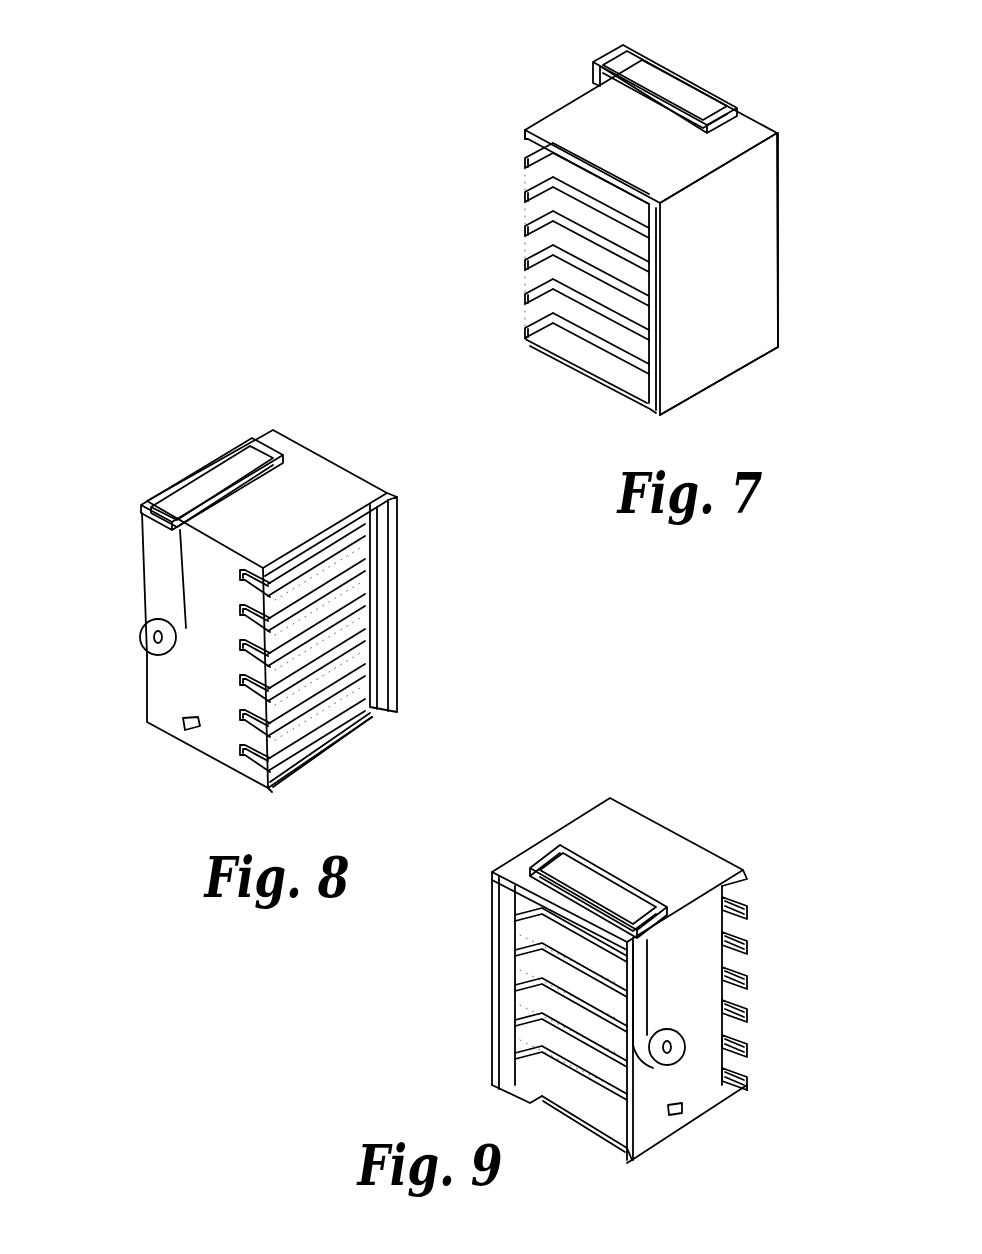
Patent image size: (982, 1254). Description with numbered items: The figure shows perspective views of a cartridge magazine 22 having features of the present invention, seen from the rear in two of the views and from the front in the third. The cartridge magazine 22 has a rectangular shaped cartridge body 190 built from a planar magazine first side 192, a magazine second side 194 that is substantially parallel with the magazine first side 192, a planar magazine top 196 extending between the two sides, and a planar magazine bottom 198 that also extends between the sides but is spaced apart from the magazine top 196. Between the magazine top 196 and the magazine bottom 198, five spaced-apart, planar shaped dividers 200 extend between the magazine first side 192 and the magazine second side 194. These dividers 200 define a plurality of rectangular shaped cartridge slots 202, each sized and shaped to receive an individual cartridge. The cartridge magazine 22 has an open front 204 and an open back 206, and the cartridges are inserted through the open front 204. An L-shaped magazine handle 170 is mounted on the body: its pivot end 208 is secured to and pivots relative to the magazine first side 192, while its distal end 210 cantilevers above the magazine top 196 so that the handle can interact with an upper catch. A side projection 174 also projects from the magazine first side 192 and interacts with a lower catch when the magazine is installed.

In FIG. 7, the cartridge magazine 22 is at (649, 221).
In FIG. 8, the cartridge magazine 22 is at (288, 583).
In FIG. 9, the cartridge magazine 22 is at (629, 970).
In FIG. 7, the magazine handle 170 is at (692, 68).
In FIG. 8, the magazine handle 170 is at (215, 506).
In FIG. 9, the magazine handle 170 is at (550, 938).
In FIG. 8, the side projection 174 is at (184, 731).
In FIG. 9, the side projection 174 is at (682, 1113).
In FIG. 7, the cartridge body 190 is at (789, 213).
In FIG. 8, the cartridge body 190 is at (303, 462).
In FIG. 9, the cartridge body 190 is at (593, 826).
In FIG. 7, the magazine first side 192 is at (548, 108).
In FIG. 8, the magazine first side 192 is at (185, 690).
In FIG. 9, the magazine first side 192 is at (700, 977).
In FIG. 7, the magazine second side 194 is at (759, 347).
In FIG. 8, the magazine second side 194 is at (370, 482).
In FIG. 9, the magazine second side 194 is at (557, 835).
In FIG. 7, the magazine top 196 is at (590, 112).
In FIG. 8, the magazine top 196 is at (320, 507).
In FIG. 9, the magazine top 196 is at (645, 835).
In FIG. 7, the magazine bottom 198 is at (697, 395).
In FIG. 8, the magazine bottom 198 is at (307, 760).
In FIG. 9, the magazine bottom 198 is at (597, 1130).
In FIG. 7, the dividers 200 is at (570, 188).
In FIG. 8, the dividers 200 is at (327, 672).
In FIG. 9, the dividers 200 is at (563, 1047).
In FIG. 7, the cartridge slots 202 is at (540, 262).
In FIG. 8, the cartridge slots 202 is at (352, 595).
In FIG. 9, the cartridge slots 202 is at (545, 998).
In FIG. 9, the open front 204 is at (550, 1120).
In FIG. 7, the open back 206 is at (558, 360).
In FIG. 8, the open back 206 is at (360, 737).
In FIG. 8, the pivot end 208 is at (143, 622).
In FIG. 9, the pivot end 208 is at (684, 1047).
In FIG. 7, the distal end 210 is at (732, 92).
In FIG. 8, the distal end 210 is at (262, 442).
In FIG. 9, the distal end 210 is at (540, 865).